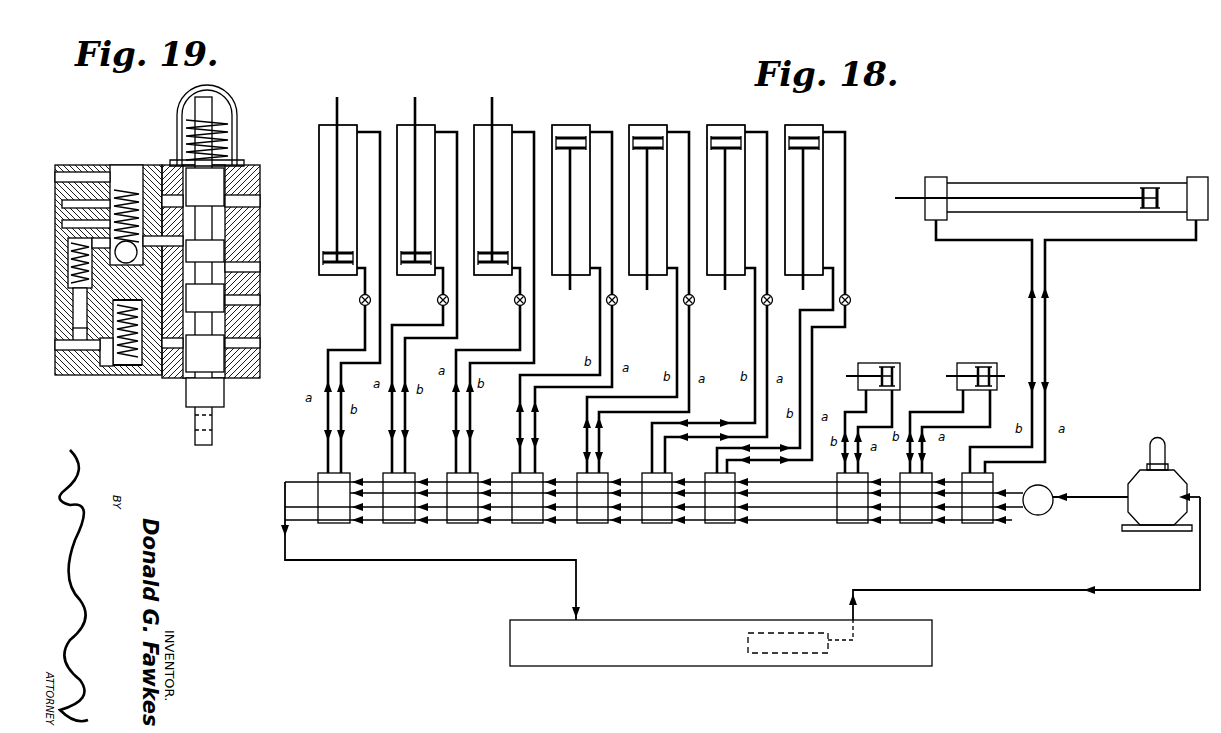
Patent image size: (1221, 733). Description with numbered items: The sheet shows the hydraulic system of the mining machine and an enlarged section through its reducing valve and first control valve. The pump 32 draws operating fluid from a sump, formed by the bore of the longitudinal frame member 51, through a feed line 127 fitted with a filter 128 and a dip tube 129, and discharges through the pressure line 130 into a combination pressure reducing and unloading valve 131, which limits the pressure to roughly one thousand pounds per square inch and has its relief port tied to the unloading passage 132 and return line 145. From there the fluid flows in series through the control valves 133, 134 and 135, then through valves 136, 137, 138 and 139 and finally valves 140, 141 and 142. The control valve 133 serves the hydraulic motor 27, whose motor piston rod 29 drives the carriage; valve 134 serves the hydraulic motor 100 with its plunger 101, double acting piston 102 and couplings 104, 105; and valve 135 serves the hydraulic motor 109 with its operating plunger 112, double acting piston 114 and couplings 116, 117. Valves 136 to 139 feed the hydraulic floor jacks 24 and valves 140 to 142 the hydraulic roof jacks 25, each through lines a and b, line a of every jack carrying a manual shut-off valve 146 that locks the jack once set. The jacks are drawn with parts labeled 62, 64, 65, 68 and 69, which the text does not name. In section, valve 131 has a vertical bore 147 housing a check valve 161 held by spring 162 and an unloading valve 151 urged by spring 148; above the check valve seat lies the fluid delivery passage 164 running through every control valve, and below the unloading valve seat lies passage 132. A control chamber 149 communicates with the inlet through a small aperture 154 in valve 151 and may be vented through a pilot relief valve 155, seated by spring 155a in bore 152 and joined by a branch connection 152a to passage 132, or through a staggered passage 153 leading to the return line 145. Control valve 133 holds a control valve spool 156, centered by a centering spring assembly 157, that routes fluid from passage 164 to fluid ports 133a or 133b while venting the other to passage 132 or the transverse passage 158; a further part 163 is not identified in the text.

In FIG. 18, the hydraulic floor jack 24 is at (578, 124).
In FIG. 18, the hydraulic roof jack 25 is at (350, 124).
In FIG. 18, the hydraulic motor 27 is at (1047, 183).
In FIG. 18, the motor piston rod 29 is at (903, 196).
In FIG. 18, the pump 32 is at (1138, 482).
In FIG. 18, the longitudinal frame member 51 is at (680, 666).
In FIG. 18, the cylinder 62 is at (319, 140).
In FIG. 18, the second fluid conduit 64 is at (362, 276).
In FIG. 18, the first fluid conduit 65 is at (380, 130).
In FIG. 18, the piston 68 is at (345, 264).
In FIG. 18, the piston rod 69 is at (337, 112).
In FIG. 18, the hydraulic motor 100 is at (975, 362).
In FIG. 18, the plunger 101 is at (948, 375).
In FIG. 18, the double acting piston 102 is at (1009, 371).
In FIG. 18, the coupling 104 is at (992, 394).
In FIG. 18, the coupling 105 is at (962, 396).
In FIG. 18, the hydraulic motor 109 is at (875, 366).
In FIG. 18, the operating plunger 112 is at (846, 375).
In FIG. 18, the double acting piston 114 is at (880, 370).
In FIG. 18, the coupling 116 is at (888, 400).
In FIG. 18, the coupling 117 is at (858, 396).
In FIG. 18, the feed line 127 is at (1040, 590).
In FIG. 18, the filter 128 is at (790, 654).
In FIG. 18, the dip tube 129 is at (856, 638).
In FIG. 19, the pressure line 130 is at (66, 266).
In FIG. 18, the pressure line 130 is at (1092, 510).
In FIG. 19, the combination pressure reducing and unloading valve 131 is at (104, 163).
In FIG. 18, the combination pressure reducing and unloading valve 131 is at (1049, 490).
In FIG. 19, the unloading passage 132 is at (242, 340).
In FIG. 18, the unloading passage 132 is at (378, 522).
In FIG. 19, the control valve 133 is at (172, 165).
In FIG. 18, the control valve 133 is at (977, 524).
In FIG. 19, the fluid port 133a is at (246, 231).
In FIG. 19, the fluid port 133b is at (242, 298).
In FIG. 19, the control valve 134 is at (246, 168).
In FIG. 18, the control valve 134 is at (916, 524).
In FIG. 18, the control valve 135 is at (852, 524).
In FIG. 18, the control valve 136 is at (720, 524).
In FIG. 18, the control valve 137 is at (657, 524).
In FIG. 18, the control valve 138 is at (597, 524).
In FIG. 18, the control valve 139 is at (530, 524).
In FIG. 18, the control valve 140 is at (468, 524).
In FIG. 18, the control valve 141 is at (404, 524).
In FIG. 18, the control valve 142 is at (340, 524).
In FIG. 18, the return line 145 is at (425, 560).
In FIG. 18, the manual shut-off valve 146 is at (362, 307).
In FIG. 19, the vertical bore 147 is at (68, 242).
In FIG. 19, the spring 148 is at (126, 366).
In FIG. 19, the control chamber 149 is at (133, 368).
In FIG. 19, the unloading valve 151 is at (100, 366).
In FIG. 19, the bore 152 is at (70, 286).
In FIG. 19, the branch connection 152a is at (70, 350).
In FIG. 19, the staggered passage 153 is at (250, 372).
In FIG. 18, the staggered passage 153 is at (455, 520).
In FIG. 19, the small aperture 154 is at (122, 268).
In FIG. 19, the pilot relief valve 155 is at (73, 312).
In FIG. 19, the spring 155a is at (72, 306).
In FIG. 19, the control valve spool 156 is at (226, 398).
In FIG. 19, the centering spring assembly 157 is at (238, 122).
In FIG. 19, the transverse passage 158 is at (242, 207).
In FIG. 18, the transverse passage 158 is at (425, 480).
In FIG. 19, the check valve 161 is at (60, 220).
In FIG. 19, the spring 162 is at (60, 197).
In FIG. 19, the passage 163 is at (62, 184).
In FIG. 19, the fluid delivery passage 164 is at (242, 265).
In FIG. 18, the fluid delivery passage 164 is at (364, 480).